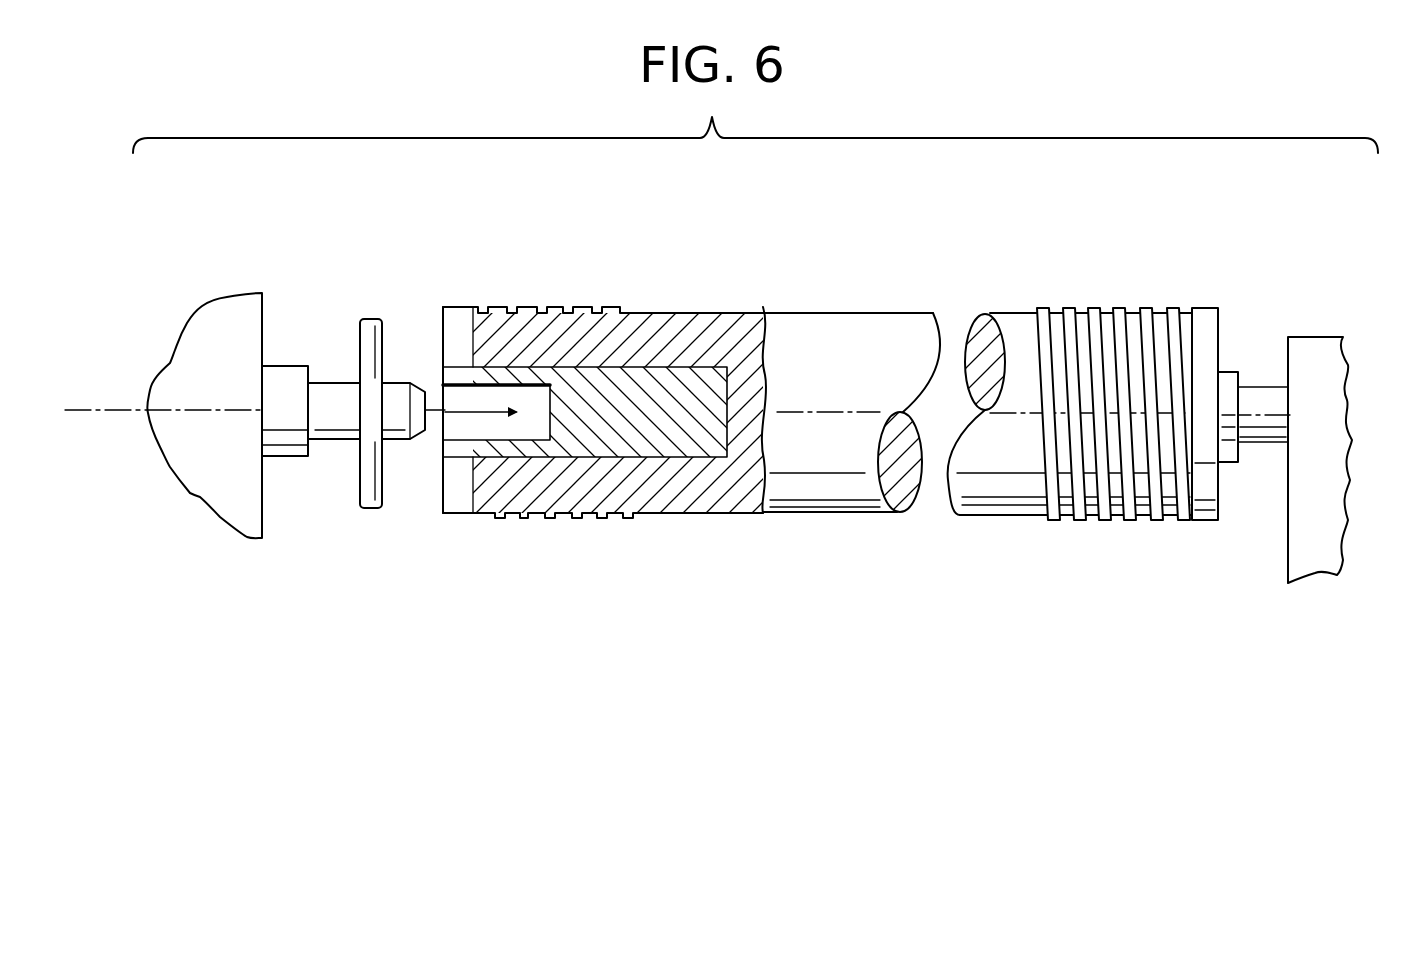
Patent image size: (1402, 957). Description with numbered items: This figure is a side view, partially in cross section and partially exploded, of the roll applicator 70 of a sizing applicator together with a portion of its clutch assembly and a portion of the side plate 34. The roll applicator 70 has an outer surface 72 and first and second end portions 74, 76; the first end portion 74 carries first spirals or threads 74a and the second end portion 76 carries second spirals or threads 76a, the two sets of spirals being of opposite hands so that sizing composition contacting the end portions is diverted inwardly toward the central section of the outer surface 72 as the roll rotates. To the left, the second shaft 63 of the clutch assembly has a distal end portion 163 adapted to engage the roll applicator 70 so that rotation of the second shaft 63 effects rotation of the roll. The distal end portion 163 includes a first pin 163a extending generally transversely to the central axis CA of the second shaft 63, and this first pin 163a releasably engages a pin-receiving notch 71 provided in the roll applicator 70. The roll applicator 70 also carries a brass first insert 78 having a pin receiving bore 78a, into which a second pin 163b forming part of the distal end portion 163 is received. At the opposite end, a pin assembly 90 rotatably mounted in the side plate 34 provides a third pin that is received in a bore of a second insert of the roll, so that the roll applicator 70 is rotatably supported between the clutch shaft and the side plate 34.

The central axis CA is at (118, 408).
The side plate 34 is at (1313, 355).
The second shaft 63 is at (281, 377).
The roll applicator 70 is at (866, 369).
The pin-receiving notch 71 is at (465, 345).
The outer surface 72 is at (902, 313).
The first end portion 74 is at (604, 392).
The first spirals or threads 74a is at (498, 517).
The second end portion 76 is at (1083, 394).
The second spirals or threads 76a is at (1055, 518).
The first insert 78 is at (585, 351).
The pin receiving bore 78a is at (540, 390).
The pin assembly 90 is at (1234, 366).
The distal end portion 163 is at (343, 383).
The first pin 163a is at (363, 478).
The second pin 163b is at (393, 390).